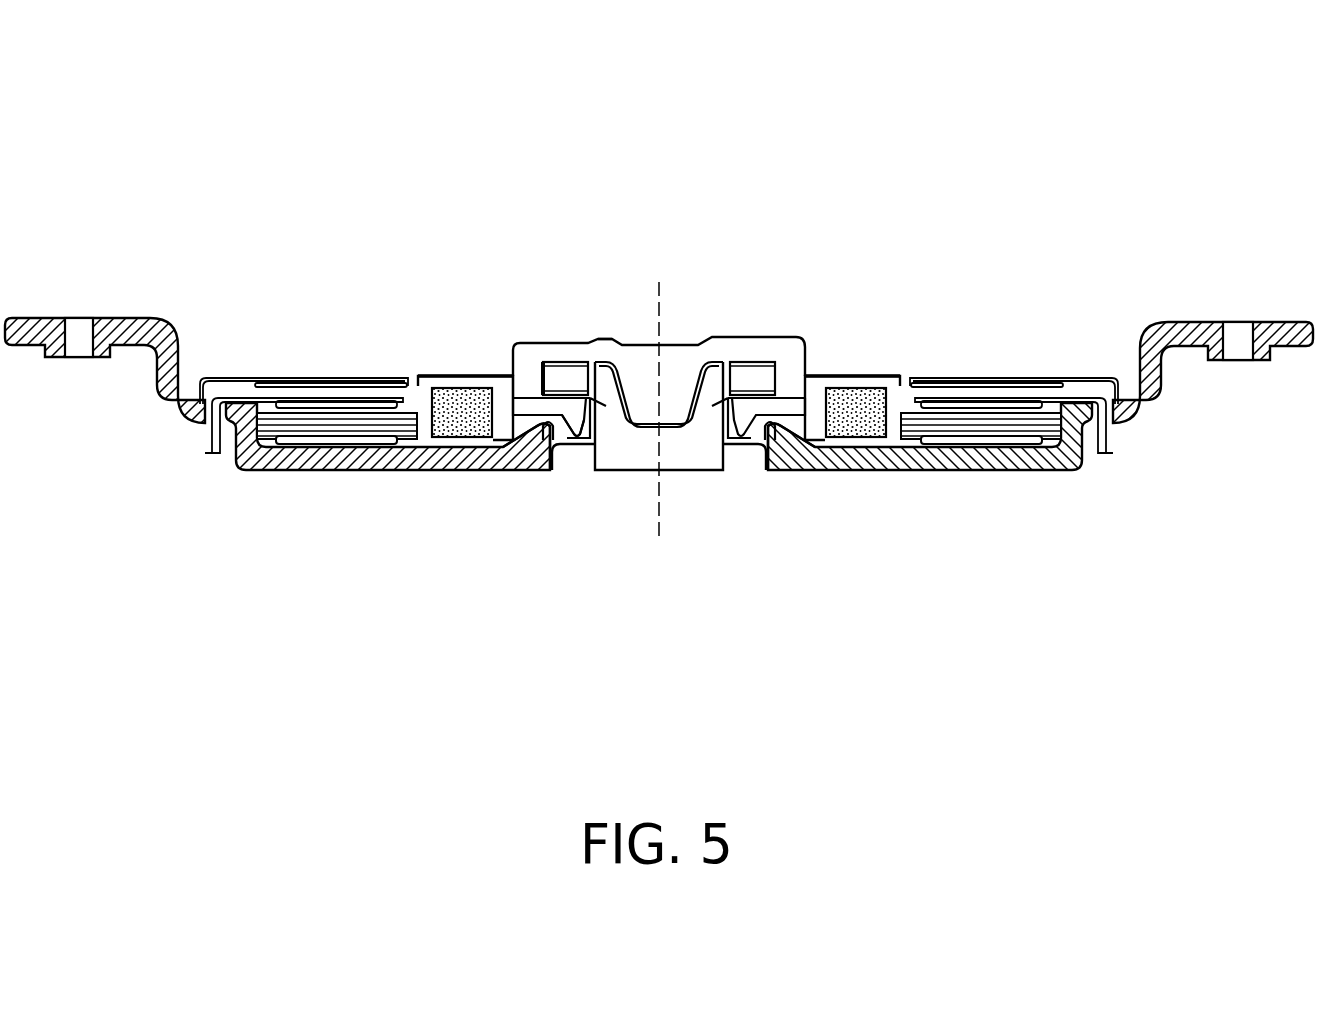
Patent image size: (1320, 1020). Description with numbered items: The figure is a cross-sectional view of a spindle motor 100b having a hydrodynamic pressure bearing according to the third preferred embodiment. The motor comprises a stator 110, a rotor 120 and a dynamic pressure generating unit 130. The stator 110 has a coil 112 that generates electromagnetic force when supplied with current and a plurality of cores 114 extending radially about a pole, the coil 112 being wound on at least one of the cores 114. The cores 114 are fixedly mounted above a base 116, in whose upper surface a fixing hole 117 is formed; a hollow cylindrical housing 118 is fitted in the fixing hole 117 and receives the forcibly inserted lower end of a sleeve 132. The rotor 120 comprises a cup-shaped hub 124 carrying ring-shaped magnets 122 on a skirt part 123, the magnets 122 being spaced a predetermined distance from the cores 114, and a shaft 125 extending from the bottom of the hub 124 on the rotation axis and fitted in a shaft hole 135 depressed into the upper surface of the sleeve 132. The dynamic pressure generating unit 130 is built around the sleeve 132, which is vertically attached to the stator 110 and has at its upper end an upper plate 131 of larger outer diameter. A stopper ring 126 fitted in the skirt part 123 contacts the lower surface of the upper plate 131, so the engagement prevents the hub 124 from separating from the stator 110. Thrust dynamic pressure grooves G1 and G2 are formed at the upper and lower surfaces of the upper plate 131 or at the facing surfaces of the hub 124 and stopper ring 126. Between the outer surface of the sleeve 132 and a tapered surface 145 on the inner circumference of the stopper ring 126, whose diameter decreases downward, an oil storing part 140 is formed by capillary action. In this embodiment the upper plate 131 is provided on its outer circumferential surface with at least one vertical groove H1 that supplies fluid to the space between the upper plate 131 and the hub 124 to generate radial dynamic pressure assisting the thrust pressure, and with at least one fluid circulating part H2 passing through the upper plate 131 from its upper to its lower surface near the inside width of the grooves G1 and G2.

The spindle motor 100b is at (1040, 212).
The stator 110 is at (659, 543).
The coil 112 is at (333, 444).
The cores 114 is at (383, 440).
The base 116 is at (473, 458).
The fixing hole 117 is at (552, 452).
The housing 118 is at (577, 456).
The rotor 120 is at (727, 338).
The magnets 122 is at (880, 398).
The skirt part 123 is at (838, 382).
The hub 124 is at (781, 345).
The shaft 125 is at (681, 360).
The stopper ring 126 is at (807, 410).
The dynamic pressure generating unit 130 is at (604, 279).
The upper plate 131 is at (513, 396).
The sleeve 132 is at (545, 360).
The shaft hole 135 is at (641, 364).
The oil storing part 140 is at (740, 448).
The tapered surface 145 is at (767, 450).
The thrust dynamic pressure groove G1 is at (565, 360).
The thrust dynamic pressure groove G2 is at (540, 388).
The vertical groove H1 is at (542, 378).
The fluid circulating part H2 is at (605, 342).